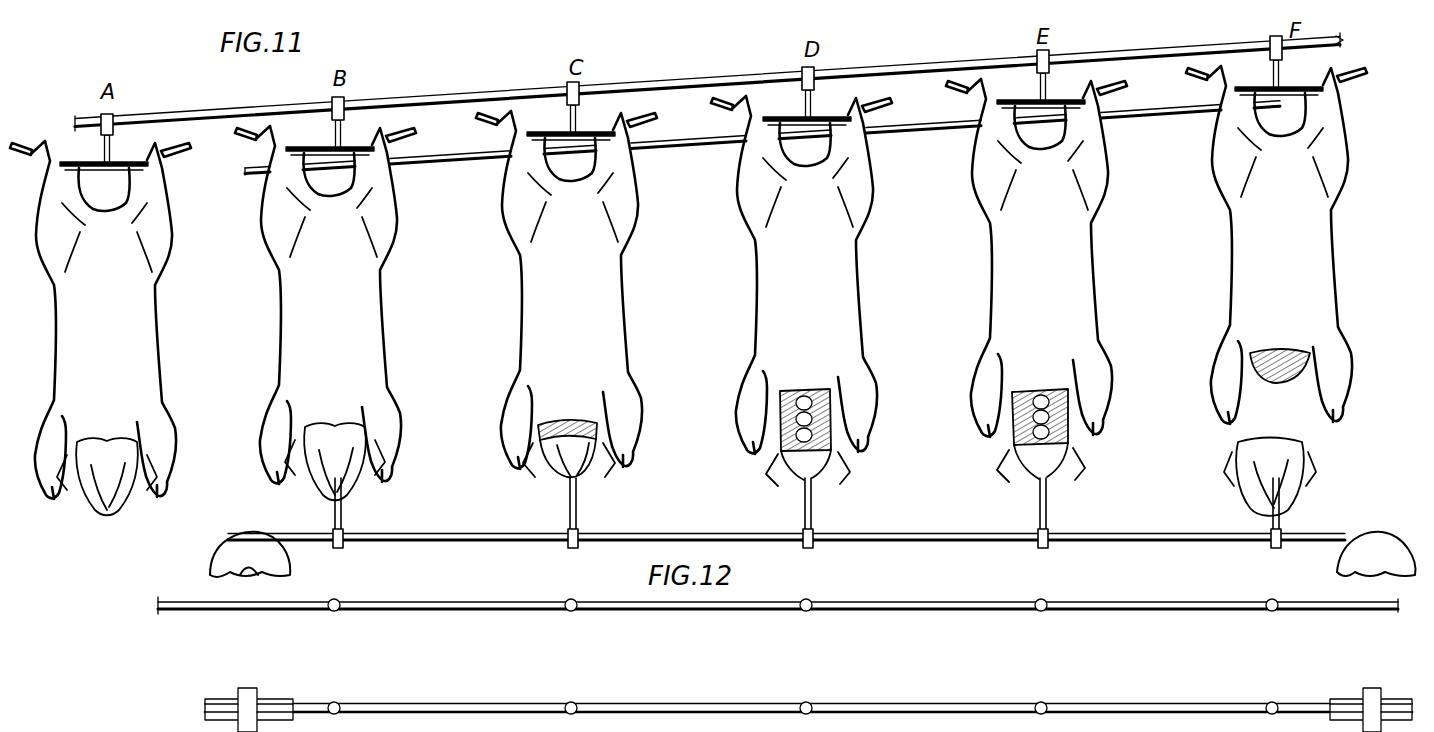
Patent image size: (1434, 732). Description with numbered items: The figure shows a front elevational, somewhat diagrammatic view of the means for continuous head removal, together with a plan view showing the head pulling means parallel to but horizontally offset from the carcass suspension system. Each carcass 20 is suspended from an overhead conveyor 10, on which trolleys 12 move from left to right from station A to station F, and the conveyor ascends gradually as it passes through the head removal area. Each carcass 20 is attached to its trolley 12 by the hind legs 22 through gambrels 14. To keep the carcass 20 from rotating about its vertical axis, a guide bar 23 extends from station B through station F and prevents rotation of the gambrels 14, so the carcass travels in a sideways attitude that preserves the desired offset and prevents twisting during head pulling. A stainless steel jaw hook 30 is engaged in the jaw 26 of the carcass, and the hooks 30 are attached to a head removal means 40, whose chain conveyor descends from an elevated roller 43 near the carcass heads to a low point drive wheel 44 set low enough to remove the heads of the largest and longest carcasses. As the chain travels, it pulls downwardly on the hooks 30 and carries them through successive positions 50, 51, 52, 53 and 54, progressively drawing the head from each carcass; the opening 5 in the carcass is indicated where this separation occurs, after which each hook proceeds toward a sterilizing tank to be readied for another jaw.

In FIG. 11, the overhead conveyor 10 is at (940, 62).
In FIG. 12, the overhead conveyor 10 is at (500, 610).
In FIG. 11, the trolleys 12 is at (114, 116).
In FIG. 11, the gambrels 14 is at (112, 148).
In FIG. 11, the carcass 20 is at (160, 308).
In FIG. 11, the hind legs 22 is at (695, 200).
In FIG. 11, the guide bar 23 is at (458, 162).
In FIG. 11, the opening cut in carcass 5 is at (103, 442).
In FIG. 11, the jaw 26 is at (118, 520).
In FIG. 11, the jaw hook 30 is at (334, 514).
In FIG. 12, the head removal means 40 is at (470, 702).
In FIG. 11, the roller 43 is at (232, 560).
In FIG. 11, the drive wheel 44 is at (1382, 540).
In FIG. 11, the hook position 50 is at (342, 548).
In FIG. 11, the hook position 51 is at (566, 545).
In FIG. 11, the hook position 52 is at (814, 545).
In FIG. 11, the hook position 53 is at (1048, 546).
In FIG. 11, the hook position 54 is at (1270, 545).